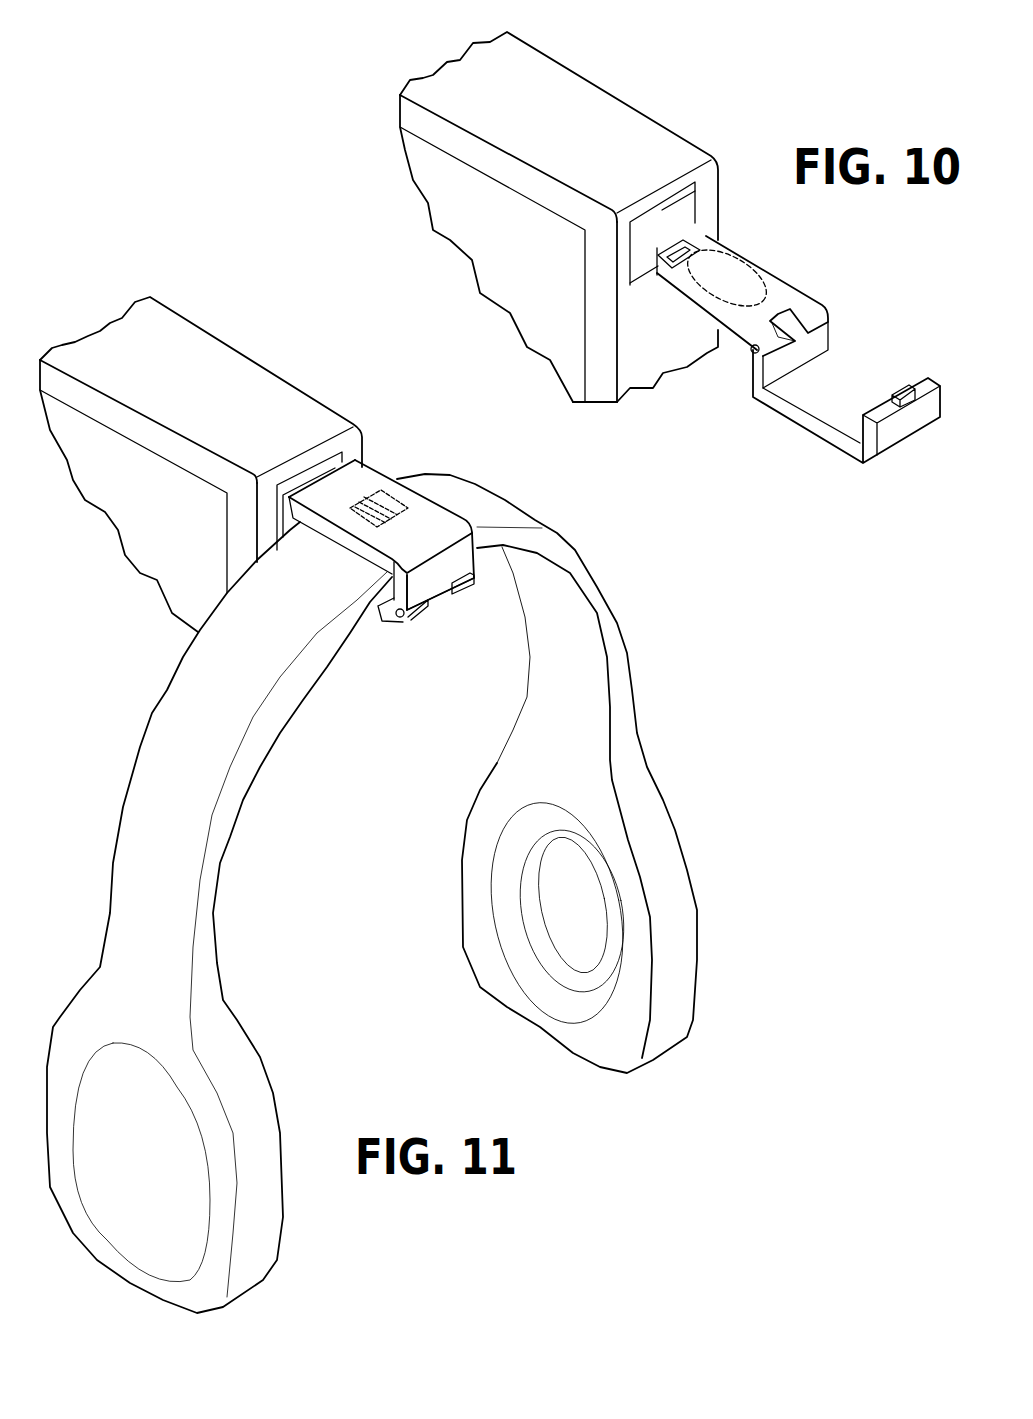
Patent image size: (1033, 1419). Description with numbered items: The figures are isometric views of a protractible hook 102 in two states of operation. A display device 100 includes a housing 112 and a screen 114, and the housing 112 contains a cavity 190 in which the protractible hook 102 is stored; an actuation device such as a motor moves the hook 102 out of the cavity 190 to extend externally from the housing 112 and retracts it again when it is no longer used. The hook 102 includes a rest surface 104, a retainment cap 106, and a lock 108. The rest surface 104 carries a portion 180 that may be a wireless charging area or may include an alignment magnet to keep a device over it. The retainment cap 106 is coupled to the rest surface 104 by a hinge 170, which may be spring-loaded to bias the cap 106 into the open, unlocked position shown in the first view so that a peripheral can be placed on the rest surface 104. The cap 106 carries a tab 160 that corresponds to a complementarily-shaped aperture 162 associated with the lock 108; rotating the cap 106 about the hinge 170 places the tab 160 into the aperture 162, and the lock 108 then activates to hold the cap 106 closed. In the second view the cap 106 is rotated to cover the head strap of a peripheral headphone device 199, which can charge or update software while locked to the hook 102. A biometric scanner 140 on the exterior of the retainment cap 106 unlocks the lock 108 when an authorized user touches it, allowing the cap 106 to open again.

In FIG. 10, the display device 100 is at (638, 69).
In FIG. 11, the display device 100 is at (278, 332).
In FIG. 10, the protractible hook 102 is at (728, 436).
In FIG. 11, the protractible hook 102 is at (446, 624).
In FIG. 10, the rest surface 104 is at (808, 291).
In FIG. 11, the rest surface 104 is at (383, 608).
In FIG. 10, the retainment cap 106 is at (842, 458).
In FIG. 11, the retainment cap 106 is at (450, 508).
In FIG. 10, the lock 108 is at (722, 237).
In FIG. 10, the housing 112 is at (536, 131).
In FIG. 11, the housing 112 is at (185, 395).
In FIG. 10, the screen 114 is at (489, 259).
In FIG. 11, the screen 114 is at (135, 529).
In FIG. 11, the biometric scanner 140 is at (388, 504).
In FIG. 10, the tab 160 is at (903, 386).
In FIG. 11, the tab 160 is at (463, 583).
In FIG. 10, the aperture 162 is at (665, 268).
In FIG. 10, the hinge 170 is at (742, 343).
In FIG. 10, the portion 180 is at (772, 270).
In FIG. 10, the cavity 190 is at (683, 205).
In FIG. 11, the headphone device 199 is at (636, 652).